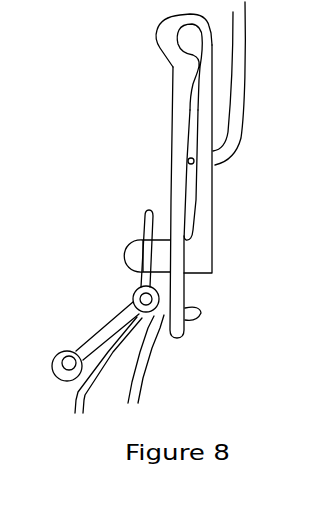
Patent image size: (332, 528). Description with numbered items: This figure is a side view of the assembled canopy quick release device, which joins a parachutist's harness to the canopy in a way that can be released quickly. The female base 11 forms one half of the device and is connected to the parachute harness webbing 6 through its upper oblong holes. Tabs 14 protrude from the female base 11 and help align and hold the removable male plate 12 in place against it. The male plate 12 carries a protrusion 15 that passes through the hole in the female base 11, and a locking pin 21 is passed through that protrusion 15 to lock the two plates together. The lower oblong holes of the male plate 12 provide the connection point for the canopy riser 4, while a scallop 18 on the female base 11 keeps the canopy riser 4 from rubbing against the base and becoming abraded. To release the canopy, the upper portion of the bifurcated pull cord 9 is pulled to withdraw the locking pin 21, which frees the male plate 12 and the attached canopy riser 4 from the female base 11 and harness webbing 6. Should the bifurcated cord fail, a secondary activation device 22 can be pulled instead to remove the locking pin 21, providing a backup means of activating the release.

The canopy riser 4 is at (242, 82).
The parachute harness webbing 6 is at (140, 359).
The bifurcated pull cord 9 is at (84, 403).
The female base 11 is at (177, 114).
The male plate 12 is at (203, 205).
The tabs 14 is at (200, 78).
The protrusion 15 is at (120, 255).
The scallop 18 is at (188, 160).
The locking pin 21 is at (147, 218).
The secondary activation device 22 is at (66, 350).